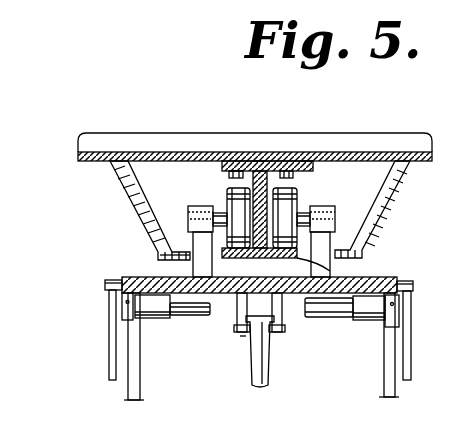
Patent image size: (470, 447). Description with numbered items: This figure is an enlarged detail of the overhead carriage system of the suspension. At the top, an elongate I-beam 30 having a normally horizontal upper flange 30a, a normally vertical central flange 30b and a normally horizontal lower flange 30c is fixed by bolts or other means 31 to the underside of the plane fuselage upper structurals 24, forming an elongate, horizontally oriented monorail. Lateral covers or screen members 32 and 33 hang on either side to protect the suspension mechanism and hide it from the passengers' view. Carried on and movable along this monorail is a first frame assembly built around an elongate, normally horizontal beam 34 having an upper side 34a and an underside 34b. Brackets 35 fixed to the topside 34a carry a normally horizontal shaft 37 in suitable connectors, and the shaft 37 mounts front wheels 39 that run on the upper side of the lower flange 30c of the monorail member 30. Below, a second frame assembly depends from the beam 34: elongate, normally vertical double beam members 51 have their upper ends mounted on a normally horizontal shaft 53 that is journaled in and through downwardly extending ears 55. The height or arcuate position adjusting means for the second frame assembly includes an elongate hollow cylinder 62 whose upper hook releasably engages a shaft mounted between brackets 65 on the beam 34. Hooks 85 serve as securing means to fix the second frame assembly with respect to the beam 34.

The plane fuselage upper structurals 24 is at (104, 140).
The I-beam 30 is at (311, 184).
The upper flange 30a is at (322, 160).
The central flange 30b is at (251, 161).
The lower flange 30c is at (330, 271).
The bolts 31 is at (233, 171).
The lateral cover 32 is at (117, 178).
The lateral cover 33 is at (400, 178).
The beam 34 is at (400, 280).
The upper side 34a is at (121, 276).
The underside 34b is at (283, 322).
The brackets 35 is at (188, 212).
The shaft 37 is at (190, 234).
The front wheels 39 is at (330, 193).
The double beam members 51 is at (128, 392).
The shaft 53 is at (189, 317).
The ears 55 is at (143, 316).
The cylinder 62 is at (252, 373).
The brackets 65 is at (240, 338).
The hooks 85 is at (109, 352).